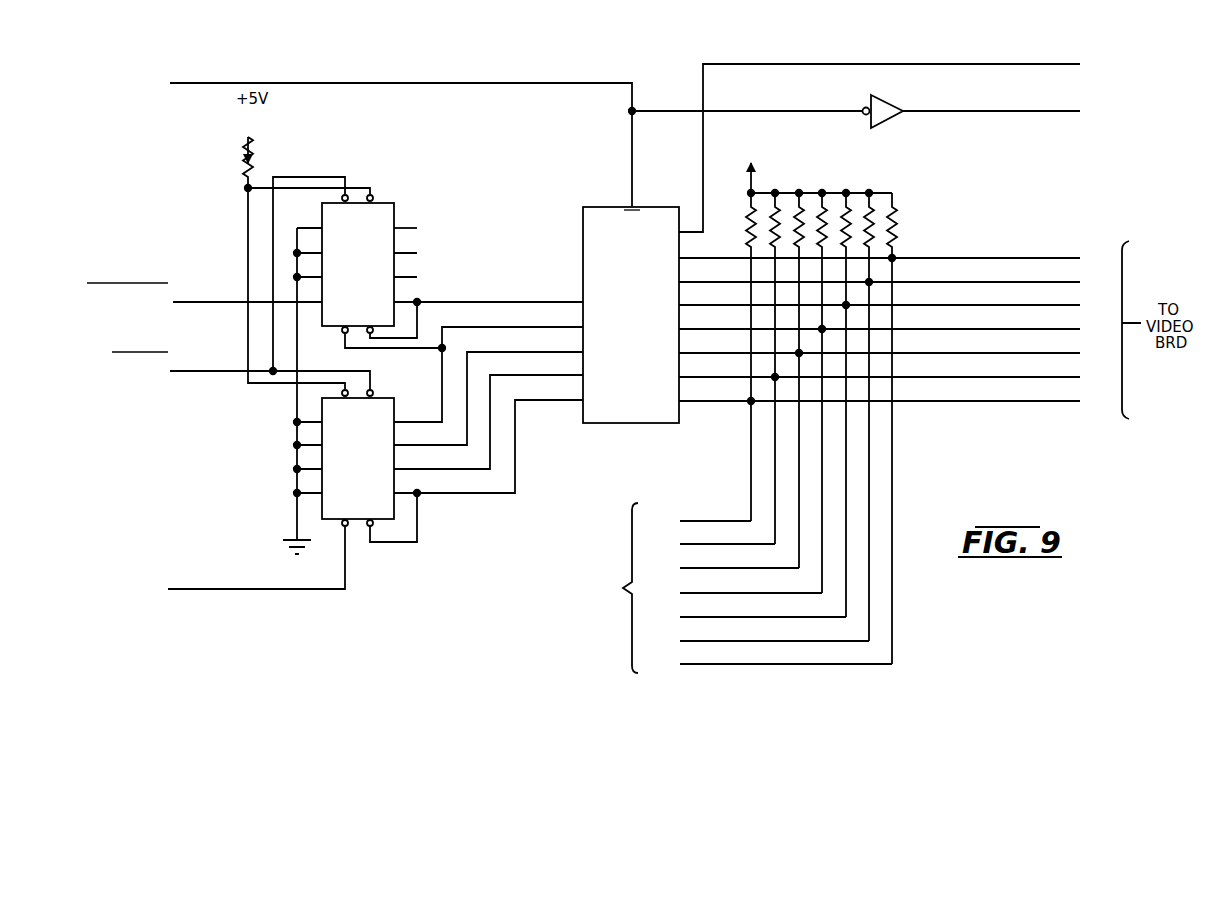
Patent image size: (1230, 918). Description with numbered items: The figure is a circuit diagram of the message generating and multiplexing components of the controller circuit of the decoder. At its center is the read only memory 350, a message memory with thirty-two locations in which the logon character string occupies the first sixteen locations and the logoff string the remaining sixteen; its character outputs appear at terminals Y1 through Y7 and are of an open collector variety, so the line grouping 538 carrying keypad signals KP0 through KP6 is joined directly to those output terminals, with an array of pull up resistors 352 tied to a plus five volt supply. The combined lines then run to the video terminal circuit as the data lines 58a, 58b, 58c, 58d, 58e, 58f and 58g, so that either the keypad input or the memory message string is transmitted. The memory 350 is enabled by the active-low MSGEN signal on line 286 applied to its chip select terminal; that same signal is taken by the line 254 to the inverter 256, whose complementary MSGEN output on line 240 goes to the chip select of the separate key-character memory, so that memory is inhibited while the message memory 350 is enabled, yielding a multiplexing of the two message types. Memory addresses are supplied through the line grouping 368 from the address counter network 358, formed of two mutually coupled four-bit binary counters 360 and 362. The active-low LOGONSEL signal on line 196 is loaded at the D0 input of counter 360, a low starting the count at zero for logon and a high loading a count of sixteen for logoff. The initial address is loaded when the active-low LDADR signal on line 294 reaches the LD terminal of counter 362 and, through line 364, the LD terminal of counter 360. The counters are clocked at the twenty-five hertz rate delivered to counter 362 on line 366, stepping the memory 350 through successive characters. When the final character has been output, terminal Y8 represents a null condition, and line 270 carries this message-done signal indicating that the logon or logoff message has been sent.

The line 286 is at (474, 83).
The line 270 is at (962, 64).
The buffer input line 254 is at (758, 111).
The inverting buffer 256 is at (888, 102).
The line 240 is at (962, 111).
The line 364 is at (323, 177).
The address counter network 358 is at (488, 171).
The 4-bit binary counter 360 is at (400, 243).
The line 196 is at (222, 300).
The line grouping 368 is at (518, 296).
The line 294 is at (220, 373).
The 4-bit binary counter 362 is at (389, 390).
The line 366 is at (228, 592).
The read only memory 350 is at (583, 245).
The pull up resistors 352 is at (979, 214).
The line grouping 538 is at (739, 675).
The line 58a is at (894, 408).
The line 58b is at (890, 384).
The line 58c is at (893, 361).
The line 58d is at (893, 337).
The line 58e is at (893, 313).
The line 58f is at (893, 290).
The line 58g is at (893, 265).